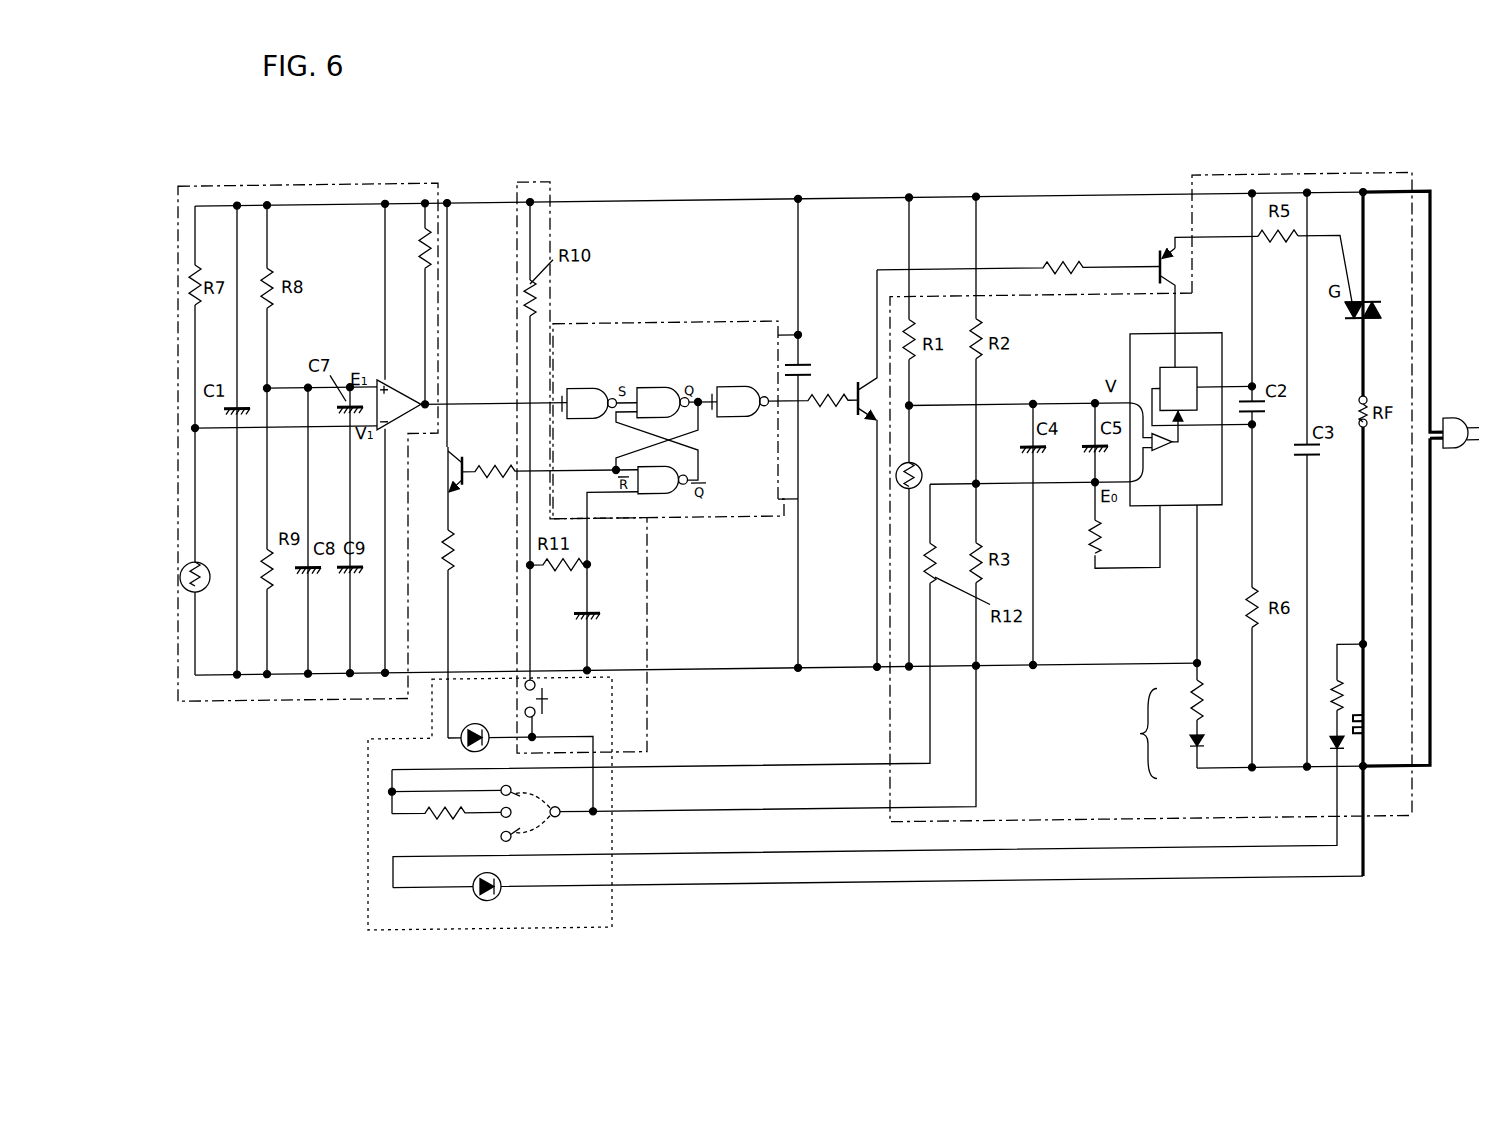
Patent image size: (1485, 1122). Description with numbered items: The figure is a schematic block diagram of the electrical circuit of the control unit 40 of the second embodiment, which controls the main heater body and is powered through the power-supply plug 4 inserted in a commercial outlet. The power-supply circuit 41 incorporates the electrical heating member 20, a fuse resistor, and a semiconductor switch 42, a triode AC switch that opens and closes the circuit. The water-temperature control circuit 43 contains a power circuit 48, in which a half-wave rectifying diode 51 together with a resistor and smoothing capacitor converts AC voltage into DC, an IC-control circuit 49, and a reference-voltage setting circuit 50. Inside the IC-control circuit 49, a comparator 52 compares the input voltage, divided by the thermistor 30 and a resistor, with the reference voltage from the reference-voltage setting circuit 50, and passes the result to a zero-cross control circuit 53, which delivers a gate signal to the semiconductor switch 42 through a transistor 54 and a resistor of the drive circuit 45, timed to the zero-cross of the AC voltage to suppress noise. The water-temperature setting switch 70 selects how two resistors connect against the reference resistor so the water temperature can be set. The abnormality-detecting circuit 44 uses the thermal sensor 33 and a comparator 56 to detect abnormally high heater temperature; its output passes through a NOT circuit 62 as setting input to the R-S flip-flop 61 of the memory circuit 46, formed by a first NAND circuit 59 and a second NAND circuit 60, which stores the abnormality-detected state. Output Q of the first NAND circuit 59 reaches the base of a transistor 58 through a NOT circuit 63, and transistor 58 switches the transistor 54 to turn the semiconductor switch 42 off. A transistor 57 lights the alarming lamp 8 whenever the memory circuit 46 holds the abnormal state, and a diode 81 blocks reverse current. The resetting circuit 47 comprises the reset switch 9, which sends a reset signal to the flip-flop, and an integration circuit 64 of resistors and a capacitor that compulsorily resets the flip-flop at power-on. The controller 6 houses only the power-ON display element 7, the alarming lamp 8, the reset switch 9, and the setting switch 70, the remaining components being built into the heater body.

The power-supply plug 4 is at (1454, 434).
The controller 6 is at (367, 819).
The power-ON display element 7 is at (500, 900).
The alarming lamp 8 is at (480, 725).
The reset switch 9 is at (545, 711).
The electrical heating member 20 is at (1371, 731).
The thermistor 30 is at (921, 478).
The thermal sensor 33 is at (204, 591).
The control unit 40 is at (736, 196).
The power-supply circuit 41 is at (1434, 302).
The semiconductor switch 42 is at (1370, 317).
The water-temperature control circuit 43 is at (1247, 186).
The abnormality-detecting circuit 44 is at (342, 187).
The drive circuit 45 is at (1009, 276).
The memory circuit 46 is at (705, 325).
The resetting circuit 47 is at (653, 714).
The power circuit 48 is at (1150, 721).
The IC-control circuit 49 is at (1205, 347).
The reference-voltage setting circuit 50 is at (987, 404).
The half-wave rectifying diode 51 is at (1195, 757).
The comparator 52 is at (1175, 459).
The zero-cross control circuit 53 is at (1163, 379).
The transistor 54 is at (1162, 261).
The comparator 56 is at (398, 395).
The transistor 57 is at (463, 459).
The transistor 58 is at (866, 390).
The first NAND circuit 59 is at (670, 393).
The second NAND circuit 60 is at (657, 498).
The R-S flip-flop 61 is at (681, 509).
The NOT circuit 62 is at (583, 393).
The NOT circuit 63 is at (742, 394).
The integration circuit 64 is at (590, 662).
The water-temperature setting switch 70 is at (550, 828).
The diode 81 is at (1333, 760).